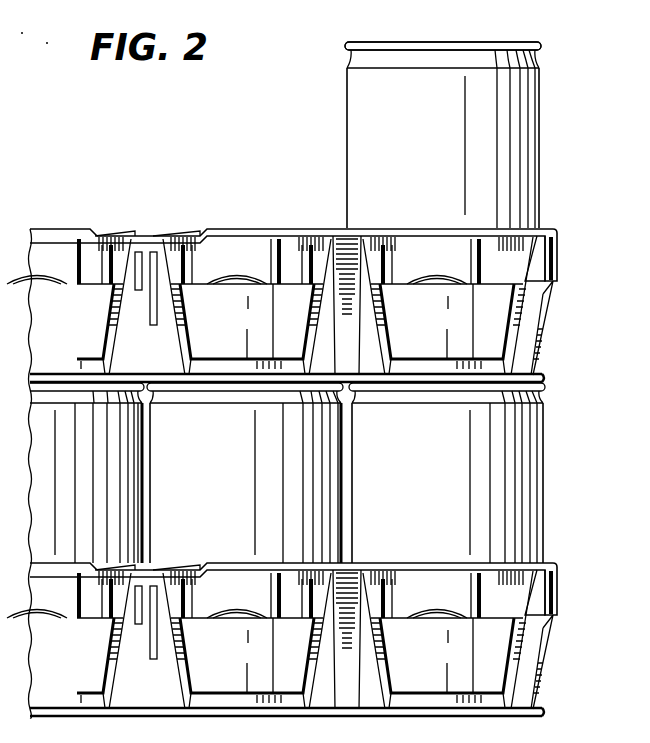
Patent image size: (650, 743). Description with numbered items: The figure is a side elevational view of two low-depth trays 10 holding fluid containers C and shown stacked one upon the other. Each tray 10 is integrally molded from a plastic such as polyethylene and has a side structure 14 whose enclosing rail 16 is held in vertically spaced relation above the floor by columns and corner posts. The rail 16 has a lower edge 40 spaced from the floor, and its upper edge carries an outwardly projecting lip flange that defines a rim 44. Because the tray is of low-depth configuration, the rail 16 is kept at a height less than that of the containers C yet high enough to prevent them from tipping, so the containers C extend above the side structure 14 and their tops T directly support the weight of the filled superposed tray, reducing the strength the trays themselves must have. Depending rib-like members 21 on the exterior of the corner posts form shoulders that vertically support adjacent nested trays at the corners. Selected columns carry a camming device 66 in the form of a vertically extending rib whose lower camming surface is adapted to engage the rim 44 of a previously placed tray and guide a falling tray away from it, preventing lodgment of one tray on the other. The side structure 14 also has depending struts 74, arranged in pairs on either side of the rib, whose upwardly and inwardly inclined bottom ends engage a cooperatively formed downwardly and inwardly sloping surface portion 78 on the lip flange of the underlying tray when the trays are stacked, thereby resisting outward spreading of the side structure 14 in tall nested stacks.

The tray 10 is at (580, 215).
The side structure 14 is at (310, 296).
The enclosing rail 16 is at (492, 270).
The rib-like member 21 is at (548, 256).
The lower edge 40 is at (387, 286).
The rim 44 is at (230, 233).
The camming device 66 is at (535, 322).
The strut 74 is at (105, 292).
The sloping surface portion 78 is at (170, 232).
The container C is at (542, 128).
The top T is at (443, 38).